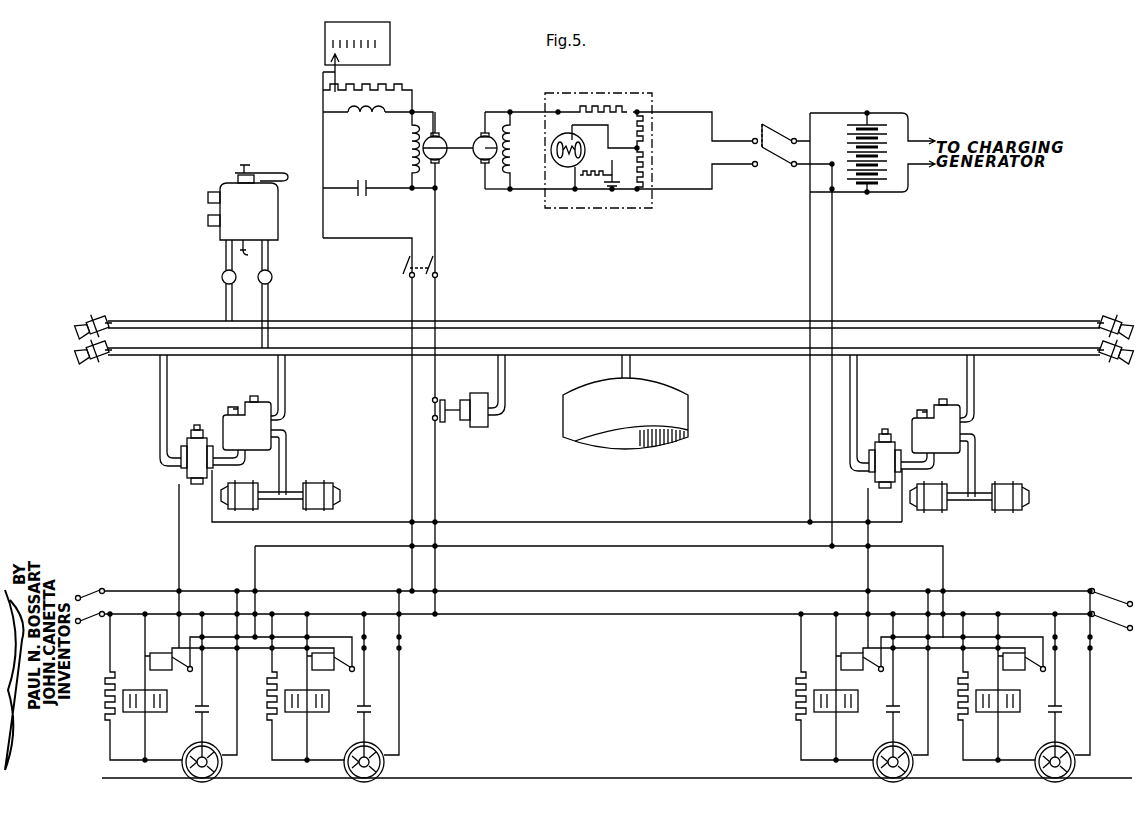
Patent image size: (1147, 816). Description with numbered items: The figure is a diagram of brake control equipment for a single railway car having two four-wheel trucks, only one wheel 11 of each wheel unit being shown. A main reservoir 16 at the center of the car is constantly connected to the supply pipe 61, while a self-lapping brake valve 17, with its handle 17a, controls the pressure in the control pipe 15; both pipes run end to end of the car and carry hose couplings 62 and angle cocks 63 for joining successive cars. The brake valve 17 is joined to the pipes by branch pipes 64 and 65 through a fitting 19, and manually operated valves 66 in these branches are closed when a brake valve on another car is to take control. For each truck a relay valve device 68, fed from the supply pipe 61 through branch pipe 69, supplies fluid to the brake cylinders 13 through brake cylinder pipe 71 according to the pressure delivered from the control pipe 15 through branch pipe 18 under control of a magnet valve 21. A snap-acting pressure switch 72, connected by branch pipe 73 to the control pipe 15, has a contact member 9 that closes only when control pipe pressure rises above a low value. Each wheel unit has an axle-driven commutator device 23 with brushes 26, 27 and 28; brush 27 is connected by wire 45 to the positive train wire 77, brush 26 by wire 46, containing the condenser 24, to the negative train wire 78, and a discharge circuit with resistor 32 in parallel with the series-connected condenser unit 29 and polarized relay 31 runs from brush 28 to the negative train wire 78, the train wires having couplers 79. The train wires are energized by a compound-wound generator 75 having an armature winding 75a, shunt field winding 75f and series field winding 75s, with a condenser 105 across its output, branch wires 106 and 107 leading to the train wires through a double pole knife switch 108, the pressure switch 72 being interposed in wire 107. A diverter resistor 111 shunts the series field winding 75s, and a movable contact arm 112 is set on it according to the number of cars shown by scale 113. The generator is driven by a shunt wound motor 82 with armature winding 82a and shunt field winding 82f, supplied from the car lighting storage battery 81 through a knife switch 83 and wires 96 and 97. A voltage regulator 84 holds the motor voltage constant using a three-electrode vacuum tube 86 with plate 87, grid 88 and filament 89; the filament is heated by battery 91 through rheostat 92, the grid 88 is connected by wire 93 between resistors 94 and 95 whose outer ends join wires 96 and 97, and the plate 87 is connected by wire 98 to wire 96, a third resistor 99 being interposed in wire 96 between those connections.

The switch 9 is at (444, 424).
The motor 11 is at (210, 752).
The brake cylinders 13 is at (282, 508).
The control pipe 15 is at (702, 354).
The main reservoir 16 is at (686, 421).
The brake valve 17 is at (264, 222).
The brake valve handle 17a is at (284, 170).
The branch pipe 18 is at (159, 376).
The fitting 19 is at (246, 257).
The magnet valve 21 is at (201, 427).
The commutator device 23 is at (214, 770).
The condenser 24 is at (210, 700).
The brush 26 is at (194, 751).
The brush 27 is at (222, 758).
The brush 28 is at (187, 766).
The condenser unit 29 is at (143, 692).
The polarized relay 31 is at (162, 679).
The resistor 32 is at (113, 728).
The wire 45 is at (1092, 687).
The wire 46 is at (1057, 692).
The supply pipe 61 is at (702, 318).
The hose couplings 62 is at (75, 333).
The angle cocks 63 is at (112, 328).
The branch pipe 64 is at (270, 302).
The branch pipe 65 is at (224, 302).
The manually operated valves 66 is at (221, 280).
The relay valve device 68 is at (257, 390).
The branch pipe 69 is at (286, 375).
The brake cylinder pipe 71 is at (284, 466).
The pressure operated switch 72 is at (484, 428).
The branch pipe 73 is at (505, 373).
The generator 75 is at (444, 127).
The armature winding 75a is at (440, 156).
The shunt field winding 75f is at (405, 158).
The series field winding 75s is at (360, 125).
The positive train wire 77 is at (580, 592).
The negative train wire 78 is at (580, 616).
The couplers 79 is at (596, 610).
The storage battery 81 is at (875, 121).
The motor 82 is at (484, 129).
The armature winding 82a is at (478, 162).
The shunt field winding 82f is at (525, 150).
The knife switch 83 is at (772, 117).
The voltage regulator 84 is at (603, 96).
The electron tube 86 is at (578, 140).
The plate 87 is at (513, 150).
The grid 88 is at (561, 178).
The filament 89 is at (588, 148).
The battery 91 is at (614, 161).
The rheostat 92 is at (599, 182).
The wire 93 is at (618, 150).
The resistor 94 is at (645, 128).
The resistor 95 is at (645, 175).
The wire 96 is at (706, 111).
The wire 97 is at (700, 191).
The wire 98 is at (546, 128).
The third resistor 99 is at (586, 108).
The electrical condenser 105 is at (372, 202).
The branch wire 106 is at (321, 234).
The branch wire 107 is at (435, 211).
The double pole knife switch 108 is at (436, 258).
The diverter resistor 111 is at (389, 86).
The movable contact arm 112 is at (336, 79).
The scale 113 is at (368, 57).